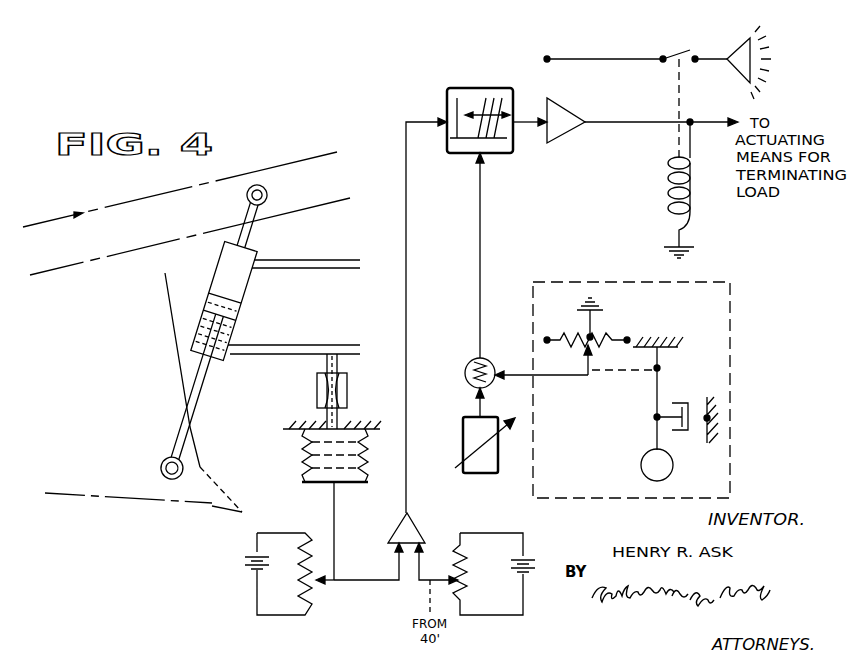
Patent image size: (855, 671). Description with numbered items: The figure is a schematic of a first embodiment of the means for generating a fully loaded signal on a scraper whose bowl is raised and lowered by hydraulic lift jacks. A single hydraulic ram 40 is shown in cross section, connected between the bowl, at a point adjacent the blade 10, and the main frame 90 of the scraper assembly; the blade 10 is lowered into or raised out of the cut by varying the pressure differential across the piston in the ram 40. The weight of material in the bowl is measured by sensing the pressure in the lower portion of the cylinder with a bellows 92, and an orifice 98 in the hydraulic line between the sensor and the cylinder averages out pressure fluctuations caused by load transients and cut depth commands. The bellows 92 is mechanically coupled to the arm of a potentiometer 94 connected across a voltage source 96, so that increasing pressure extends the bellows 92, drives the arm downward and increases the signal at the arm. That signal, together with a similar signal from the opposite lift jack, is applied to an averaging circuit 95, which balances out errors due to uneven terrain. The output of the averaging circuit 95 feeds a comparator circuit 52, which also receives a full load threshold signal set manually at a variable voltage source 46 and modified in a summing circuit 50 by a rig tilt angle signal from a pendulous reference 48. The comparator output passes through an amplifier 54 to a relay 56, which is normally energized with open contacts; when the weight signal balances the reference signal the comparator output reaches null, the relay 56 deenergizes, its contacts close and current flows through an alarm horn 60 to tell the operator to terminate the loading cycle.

The blade 10 is at (207, 507).
The hydraulic ram 40 is at (250, 287).
The variable voltage source 46 is at (463, 438).
The pendulous reference 48 is at (533, 495).
The summing circuit 50 is at (470, 362).
The comparator circuit 52 is at (468, 88).
The amplifier 54 is at (563, 110).
The relay 56 is at (690, 205).
The alarm horn 60 is at (745, 40).
The main frame 90 is at (300, 178).
The bellows 92 is at (305, 447).
The potentiometer 94 is at (267, 572).
The averaging circuit 95 is at (410, 520).
The voltage source 96 is at (238, 565).
The orifice 98 is at (317, 389).